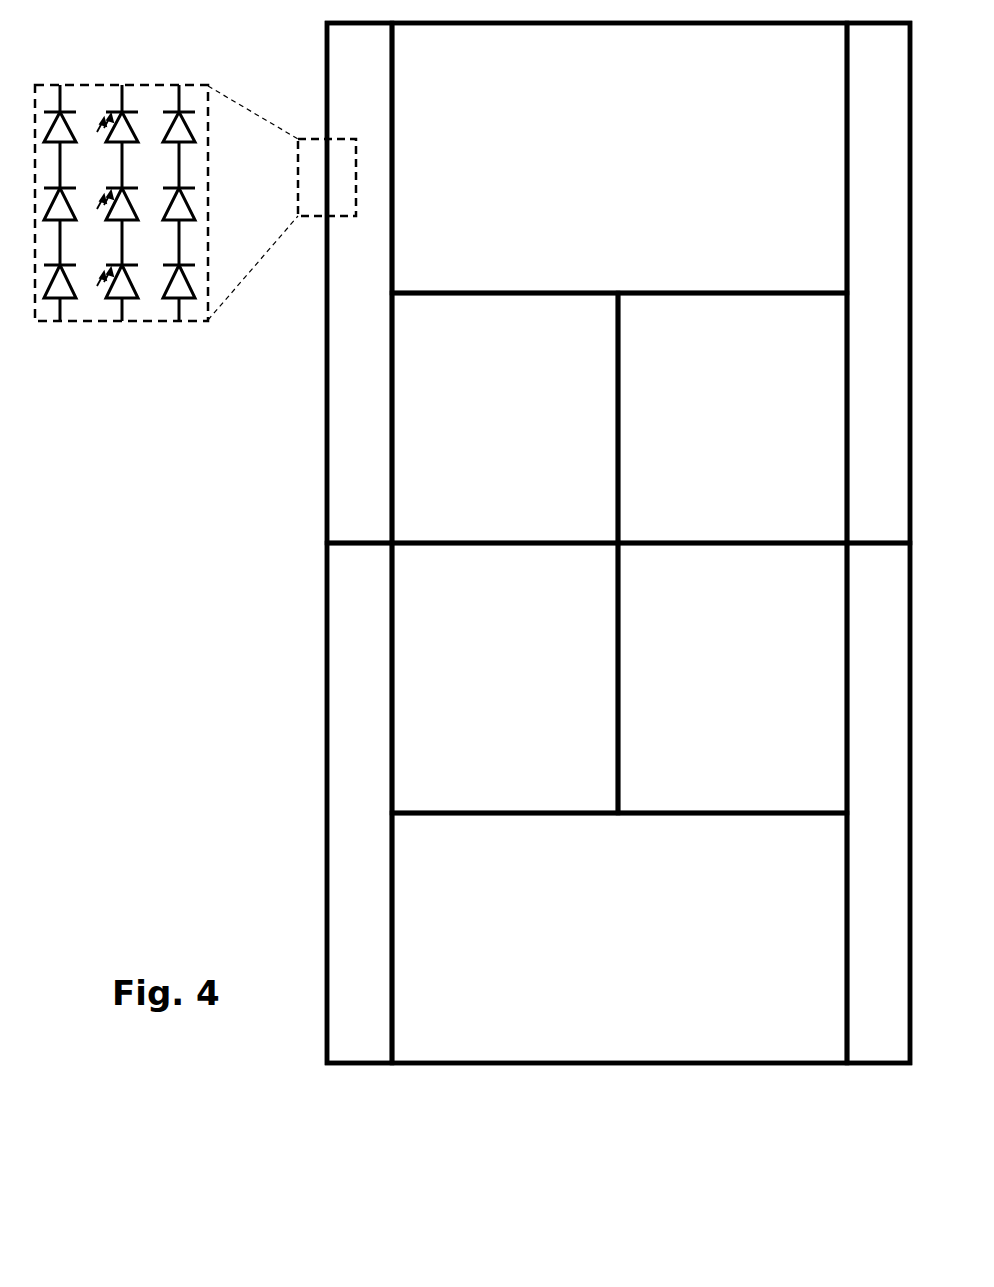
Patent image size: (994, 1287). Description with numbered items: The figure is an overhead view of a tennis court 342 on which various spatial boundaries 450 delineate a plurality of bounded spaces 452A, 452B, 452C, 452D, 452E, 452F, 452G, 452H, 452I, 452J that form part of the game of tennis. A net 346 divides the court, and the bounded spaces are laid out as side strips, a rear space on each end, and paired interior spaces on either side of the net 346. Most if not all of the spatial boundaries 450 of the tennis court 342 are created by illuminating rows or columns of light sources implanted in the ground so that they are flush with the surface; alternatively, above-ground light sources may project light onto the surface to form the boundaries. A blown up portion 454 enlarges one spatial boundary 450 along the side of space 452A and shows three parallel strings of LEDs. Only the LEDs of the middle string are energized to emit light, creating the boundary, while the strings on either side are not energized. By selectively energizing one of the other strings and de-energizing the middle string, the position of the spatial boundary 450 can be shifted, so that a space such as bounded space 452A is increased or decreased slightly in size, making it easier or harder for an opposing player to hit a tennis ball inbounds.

The tennis court 342 is at (598, 1104).
The net 346 is at (710, 545).
The spatial boundary 450 is at (692, 25).
The bounded space 452A is at (359, 283).
The bounded space 452B is at (619, 158).
The bounded space 452C is at (879, 283).
The bounded space 452D is at (505, 418).
The bounded space 452E is at (732, 418).
The bounded space 452F is at (359, 803).
The bounded space 452G is at (505, 678).
The bounded space 452H is at (732, 678).
The bounded space 452I is at (878, 803).
The bounded space 452J is at (619, 938).
The blown up portion 454 is at (122, 322).